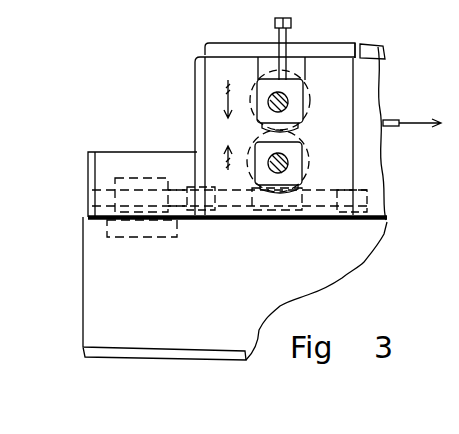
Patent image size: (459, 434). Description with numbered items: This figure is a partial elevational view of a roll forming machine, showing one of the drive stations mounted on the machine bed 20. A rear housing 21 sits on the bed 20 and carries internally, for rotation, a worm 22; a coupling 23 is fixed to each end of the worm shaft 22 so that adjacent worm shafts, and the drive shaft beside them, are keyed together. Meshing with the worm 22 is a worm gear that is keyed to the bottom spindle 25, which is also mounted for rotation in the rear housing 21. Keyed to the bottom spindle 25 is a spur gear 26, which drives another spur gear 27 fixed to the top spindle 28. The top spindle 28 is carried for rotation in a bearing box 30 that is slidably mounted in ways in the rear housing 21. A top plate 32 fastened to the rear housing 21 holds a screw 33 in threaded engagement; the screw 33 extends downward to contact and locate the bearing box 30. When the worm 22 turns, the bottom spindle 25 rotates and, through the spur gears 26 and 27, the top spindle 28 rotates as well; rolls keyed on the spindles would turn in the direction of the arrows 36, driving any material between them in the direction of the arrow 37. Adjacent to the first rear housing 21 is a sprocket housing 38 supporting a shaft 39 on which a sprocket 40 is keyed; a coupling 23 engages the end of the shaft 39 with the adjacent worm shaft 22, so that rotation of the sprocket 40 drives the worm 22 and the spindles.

The bed 20 is at (90, 315).
The rear housing 21 is at (345, 48).
The worm shaft 22 is at (286, 212).
The coupling 23 is at (196, 213).
The bottom spindle 25 is at (288, 163).
The spur gear 26 is at (311, 168).
The spur gear 27 is at (311, 98).
The top spindle 28 is at (289, 108).
The bearing box 30 is at (300, 88).
The top plate 32 is at (230, 47).
The screw 33 is at (292, 33).
The arrows 36 is at (228, 80).
The arrow 37 is at (424, 124).
The sprocket housing 38 is at (128, 152).
The shaft 39 is at (176, 190).
The sprocket 40 is at (118, 178).